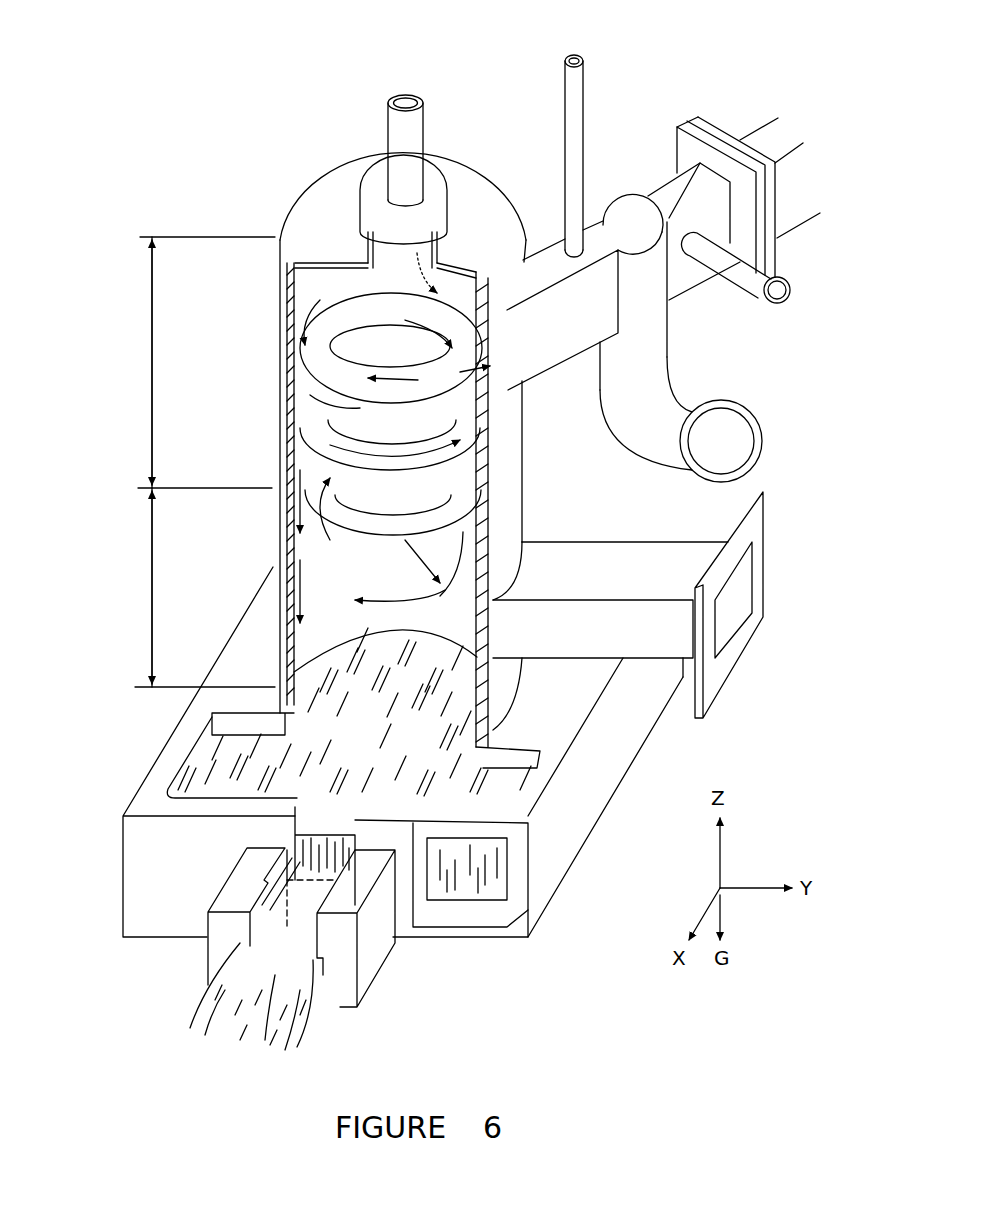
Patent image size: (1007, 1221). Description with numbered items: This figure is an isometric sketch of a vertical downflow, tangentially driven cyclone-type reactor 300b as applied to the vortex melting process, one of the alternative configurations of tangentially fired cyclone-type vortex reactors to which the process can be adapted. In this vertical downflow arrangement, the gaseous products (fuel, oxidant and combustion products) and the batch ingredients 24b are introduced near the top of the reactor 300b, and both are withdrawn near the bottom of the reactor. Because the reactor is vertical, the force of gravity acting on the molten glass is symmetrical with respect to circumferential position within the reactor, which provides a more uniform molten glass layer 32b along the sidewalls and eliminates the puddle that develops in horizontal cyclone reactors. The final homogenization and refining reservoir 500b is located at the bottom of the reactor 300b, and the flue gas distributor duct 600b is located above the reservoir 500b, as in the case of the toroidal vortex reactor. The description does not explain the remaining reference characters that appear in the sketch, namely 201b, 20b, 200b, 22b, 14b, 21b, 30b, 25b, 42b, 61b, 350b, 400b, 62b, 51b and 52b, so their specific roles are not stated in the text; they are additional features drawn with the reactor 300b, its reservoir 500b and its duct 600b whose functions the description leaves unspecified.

The reactor 300b is at (343, 148).
The gas inlet nozzle 201b is at (430, 116).
The gas inlet pipe 20b is at (573, 12).
The gas duct 200b is at (623, 276).
The elbow outlet pipe 22b is at (757, 468).
The flange plates 14b is at (785, 178).
The small feed pipe 21b is at (800, 304).
The swirl rings / vortex zone 30b is at (391, 414).
The molten glass layer 32b is at (328, 386).
The batch ingredients 24b is at (429, 378).
The particle inlet flow 25b is at (449, 284).
The downward wall flow 42b is at (293, 670).
The return flow 61b is at (476, 631).
The upper section height 350b is at (195, 362).
The lower section height 400b is at (195, 587).
The flue gas distributor duct 600b is at (610, 636).
The outlet window plate 62b is at (735, 593).
The final homogenization and refining reservoir 500b is at (403, 752).
The drain slot 51b is at (323, 858).
The discharge spout stream 52b is at (297, 927).